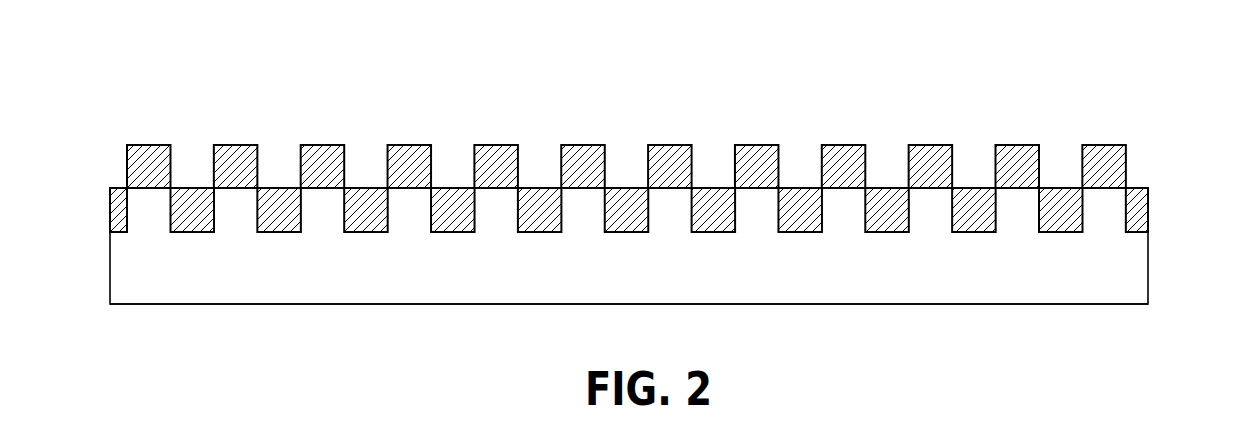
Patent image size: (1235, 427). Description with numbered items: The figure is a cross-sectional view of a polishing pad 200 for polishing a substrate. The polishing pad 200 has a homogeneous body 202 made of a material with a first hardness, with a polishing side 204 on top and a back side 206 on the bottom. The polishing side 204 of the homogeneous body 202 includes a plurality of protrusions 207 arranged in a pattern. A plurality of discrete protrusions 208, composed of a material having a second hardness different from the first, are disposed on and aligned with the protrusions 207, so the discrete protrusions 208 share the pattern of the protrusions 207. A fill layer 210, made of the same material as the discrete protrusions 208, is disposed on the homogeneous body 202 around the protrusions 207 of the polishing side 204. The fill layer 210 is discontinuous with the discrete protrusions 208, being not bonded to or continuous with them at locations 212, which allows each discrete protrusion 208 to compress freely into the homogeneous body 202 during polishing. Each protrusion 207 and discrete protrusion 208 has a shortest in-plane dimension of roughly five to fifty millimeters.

The polishing pad 200 is at (956, 78).
The homogeneous body 202 is at (1135, 257).
The polishing side 204 is at (1103, 190).
The back side 206 is at (1050, 304).
The protrusions 207 is at (323, 190).
The discrete protrusions 208 is at (98, 143).
The fill layer 210 is at (452, 188).
The locations 212 is at (812, 165).